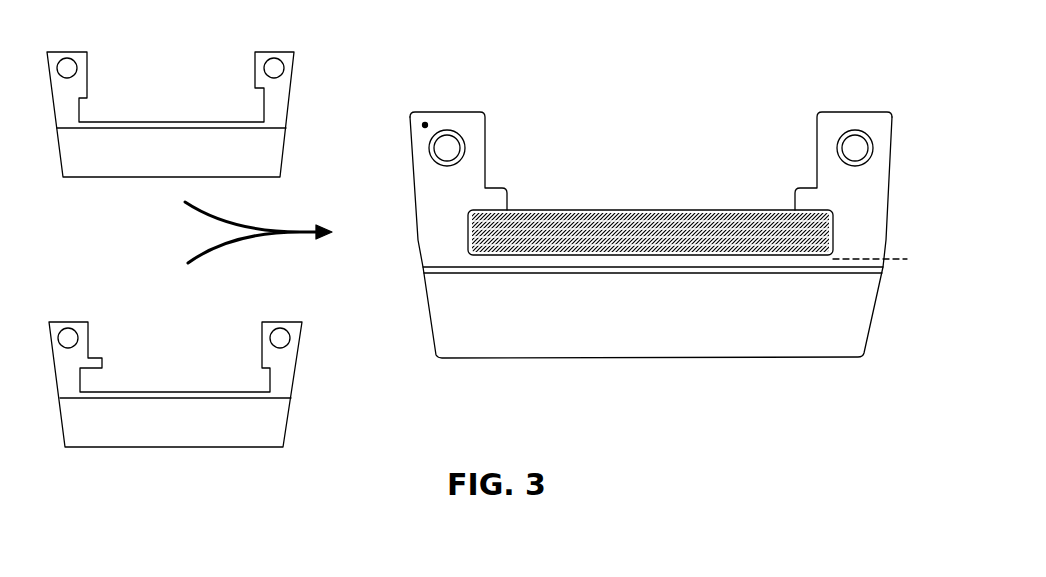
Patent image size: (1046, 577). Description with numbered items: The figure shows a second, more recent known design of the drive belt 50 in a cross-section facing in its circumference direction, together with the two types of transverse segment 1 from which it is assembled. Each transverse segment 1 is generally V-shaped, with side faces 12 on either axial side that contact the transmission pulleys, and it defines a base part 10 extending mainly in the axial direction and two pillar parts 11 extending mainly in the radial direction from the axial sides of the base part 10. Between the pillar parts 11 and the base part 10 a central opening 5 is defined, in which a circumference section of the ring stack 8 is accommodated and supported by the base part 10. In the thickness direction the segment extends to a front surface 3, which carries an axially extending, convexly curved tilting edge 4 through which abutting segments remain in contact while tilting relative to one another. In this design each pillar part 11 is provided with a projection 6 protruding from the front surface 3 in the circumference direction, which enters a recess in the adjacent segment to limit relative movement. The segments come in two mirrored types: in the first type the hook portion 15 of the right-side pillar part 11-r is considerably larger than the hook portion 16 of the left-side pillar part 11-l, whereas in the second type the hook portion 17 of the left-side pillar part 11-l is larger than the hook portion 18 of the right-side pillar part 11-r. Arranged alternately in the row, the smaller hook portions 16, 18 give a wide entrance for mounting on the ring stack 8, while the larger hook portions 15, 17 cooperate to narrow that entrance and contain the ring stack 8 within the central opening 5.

The transverse segment 1 is at (148, 163).
The front surface 3 is at (425, 125).
The tilting edge 4 is at (778, 268).
The opening 5 is at (170, 113).
The projection 6 is at (455, 140).
The ring stack 8 is at (698, 212).
The base part 10 is at (525, 350).
The pillar part 11 is at (930, 120).
The left-side pillar part 11-l is at (83, 57).
The right-side pillar part 11-r is at (258, 60).
The side face 12 is at (424, 303).
The hook portion 15 is at (247, 90).
The hook portion 16 is at (92, 98).
The hook portion 17 is at (102, 358).
The hook portion 18 is at (262, 360).
The drive belt 50 is at (684, 90).